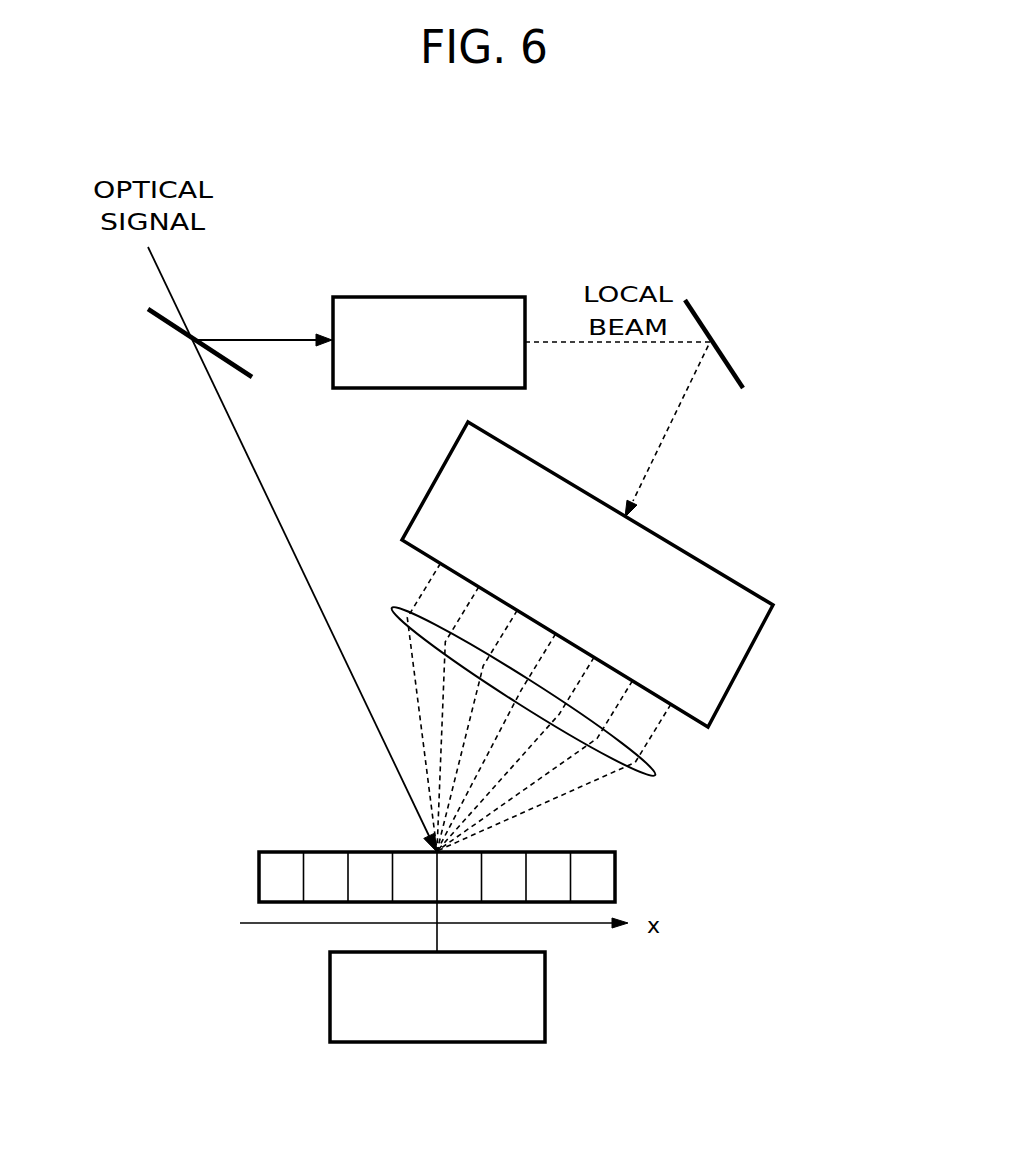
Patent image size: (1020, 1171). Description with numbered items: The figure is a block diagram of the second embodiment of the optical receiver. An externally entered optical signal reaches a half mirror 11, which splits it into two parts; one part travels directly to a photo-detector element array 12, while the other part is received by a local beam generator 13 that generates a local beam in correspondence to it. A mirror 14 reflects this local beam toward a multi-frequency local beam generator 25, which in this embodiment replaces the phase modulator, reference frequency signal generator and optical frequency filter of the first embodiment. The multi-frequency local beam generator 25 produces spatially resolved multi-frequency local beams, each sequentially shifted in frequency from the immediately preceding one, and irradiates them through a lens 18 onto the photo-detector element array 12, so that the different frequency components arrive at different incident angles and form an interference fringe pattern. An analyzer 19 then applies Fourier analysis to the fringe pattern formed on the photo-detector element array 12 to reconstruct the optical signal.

The half mirror 11 is at (173, 330).
The photo-detector element array 12 is at (262, 852).
The local beam generator 13 is at (512, 297).
The mirror 14 is at (697, 313).
The multi-frequency local beam generator 25 is at (748, 588).
The lens 18 is at (655, 775).
The analyzer 19 is at (545, 1028).